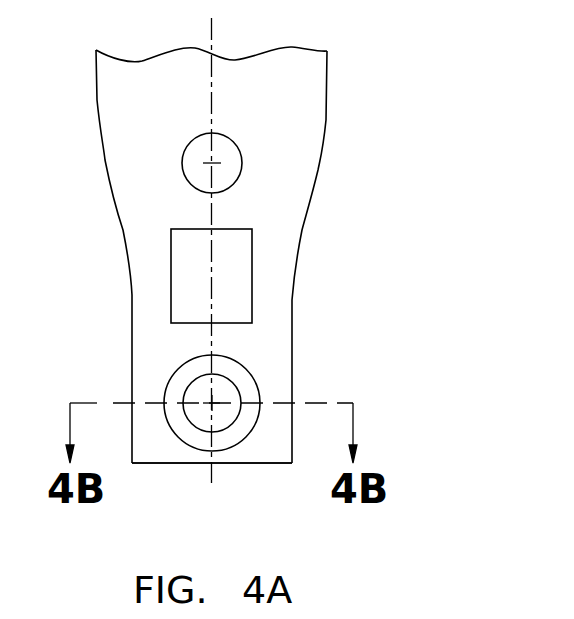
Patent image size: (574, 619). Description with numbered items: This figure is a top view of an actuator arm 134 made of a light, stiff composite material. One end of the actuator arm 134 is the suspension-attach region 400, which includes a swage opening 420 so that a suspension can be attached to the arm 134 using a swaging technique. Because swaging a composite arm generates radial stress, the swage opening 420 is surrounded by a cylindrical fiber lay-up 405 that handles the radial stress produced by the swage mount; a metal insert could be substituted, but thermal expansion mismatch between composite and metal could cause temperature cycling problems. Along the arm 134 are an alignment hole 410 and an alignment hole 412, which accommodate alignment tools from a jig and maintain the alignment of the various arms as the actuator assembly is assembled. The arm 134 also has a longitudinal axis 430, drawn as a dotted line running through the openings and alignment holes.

The actuator arm 134 is at (327, 126).
The longitudinal axis 430 is at (212, 38).
The alignment hole 412 is at (185, 152).
The alignment hole 410 is at (252, 252).
The cylindrical fiber lay-up 405 is at (257, 385).
The swage opening 420 is at (186, 388).
The suspension-attach region 400 is at (168, 463).